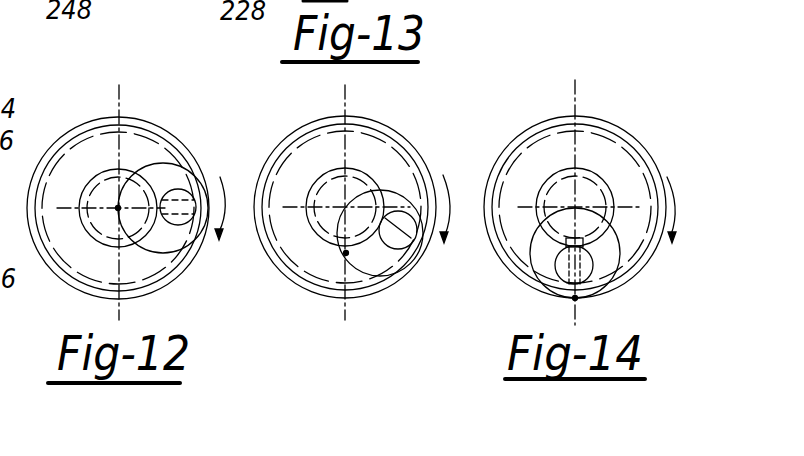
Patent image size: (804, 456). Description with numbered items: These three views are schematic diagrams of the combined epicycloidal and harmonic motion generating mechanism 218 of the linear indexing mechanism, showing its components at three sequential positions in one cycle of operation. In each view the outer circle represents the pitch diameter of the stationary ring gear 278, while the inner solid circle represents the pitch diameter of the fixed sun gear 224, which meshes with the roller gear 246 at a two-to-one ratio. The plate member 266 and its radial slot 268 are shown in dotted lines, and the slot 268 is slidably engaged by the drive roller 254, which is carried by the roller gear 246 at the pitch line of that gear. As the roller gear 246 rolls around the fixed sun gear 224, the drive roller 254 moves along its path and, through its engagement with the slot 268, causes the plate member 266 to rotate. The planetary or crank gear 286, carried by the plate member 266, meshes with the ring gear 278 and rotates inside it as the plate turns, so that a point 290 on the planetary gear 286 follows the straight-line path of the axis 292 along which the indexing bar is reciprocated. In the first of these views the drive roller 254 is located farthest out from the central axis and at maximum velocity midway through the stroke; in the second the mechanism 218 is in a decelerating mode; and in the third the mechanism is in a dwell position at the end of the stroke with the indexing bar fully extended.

In FIG. 12, the combined epicycloidal and harmonic motion generating mechanism 218 is at (186, 98).
In FIG. 13, the combined epicycloidal and harmonic motion generating mechanism 218 is at (296, 89).
In FIG. 14, the combined epicycloidal and harmonic motion generating mechanism 218 is at (652, 138).
In FIG. 12, the fixed sun gear 224 is at (103, 246).
In FIG. 13, the fixed sun gear 224 is at (328, 172).
In FIG. 14, the fixed sun gear 224 is at (597, 172).
In FIG. 12, the roller gear 246 is at (196, 199).
In FIG. 13, the roller gear 246 is at (412, 215).
In FIG. 14, the roller gear 246 is at (593, 262).
In FIG. 12, the drive roller 254 is at (199, 205).
In FIG. 13, the drive roller 254 is at (398, 262).
In FIG. 14, the drive roller 254 is at (640, 262).
In FIG. 12, the plate member 266 is at (141, 285).
In FIG. 13, the plate member 266 is at (320, 297).
In FIG. 14, the plate member 266 is at (537, 148).
In FIG. 12, the radial slot 268 is at (166, 224).
In FIG. 13, the radial slot 268 is at (346, 253).
In FIG. 14, the radial slot 268 is at (590, 280).
In FIG. 12, the ring gear 278 is at (93, 117).
In FIG. 13, the ring gear 278 is at (375, 122).
In FIG. 14, the ring gear 278 is at (667, 168).
In FIG. 12, the planetary or crank gear 286 is at (178, 188).
In FIG. 13, the planetary or crank gear 286 is at (405, 207).
In FIG. 14, the planetary or crank gear 286 is at (600, 265).
In FIG. 12, the point 290 is at (118, 208).
In FIG. 13, the point 290 is at (346, 253).
In FIG. 14, the point 290 is at (590, 298).
In FIG. 12, the axis 292 is at (124, 100).
In FIG. 13, the axis 292 is at (346, 100).
In FIG. 14, the axis 292 is at (577, 98).